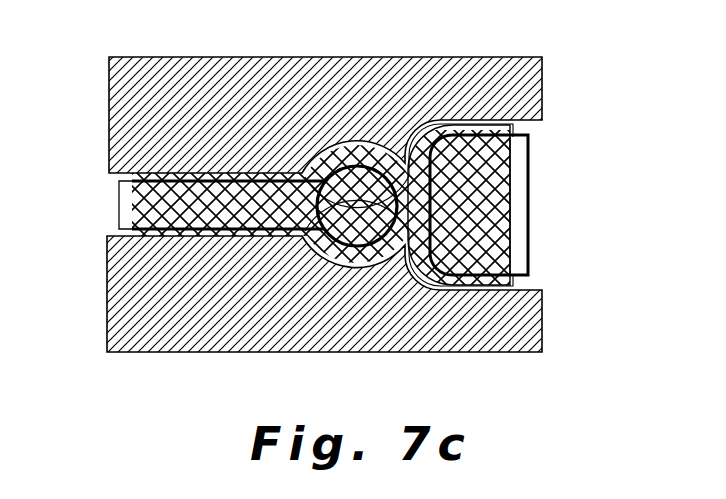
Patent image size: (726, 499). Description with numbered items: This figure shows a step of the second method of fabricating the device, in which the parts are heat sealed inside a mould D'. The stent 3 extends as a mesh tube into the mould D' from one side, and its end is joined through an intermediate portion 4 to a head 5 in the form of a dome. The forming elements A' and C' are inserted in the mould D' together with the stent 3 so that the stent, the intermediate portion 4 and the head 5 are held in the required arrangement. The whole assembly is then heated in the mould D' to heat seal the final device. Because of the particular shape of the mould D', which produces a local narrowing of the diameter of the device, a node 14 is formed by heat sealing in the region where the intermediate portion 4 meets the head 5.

The stent 3 is at (160, 232).
The intermediate portion 4 is at (365, 262).
The head 5 is at (528, 262).
The node 14 is at (410, 187).
The element A' is at (291, 313).
The element C' is at (554, 183).
The mould D' is at (357, 115).